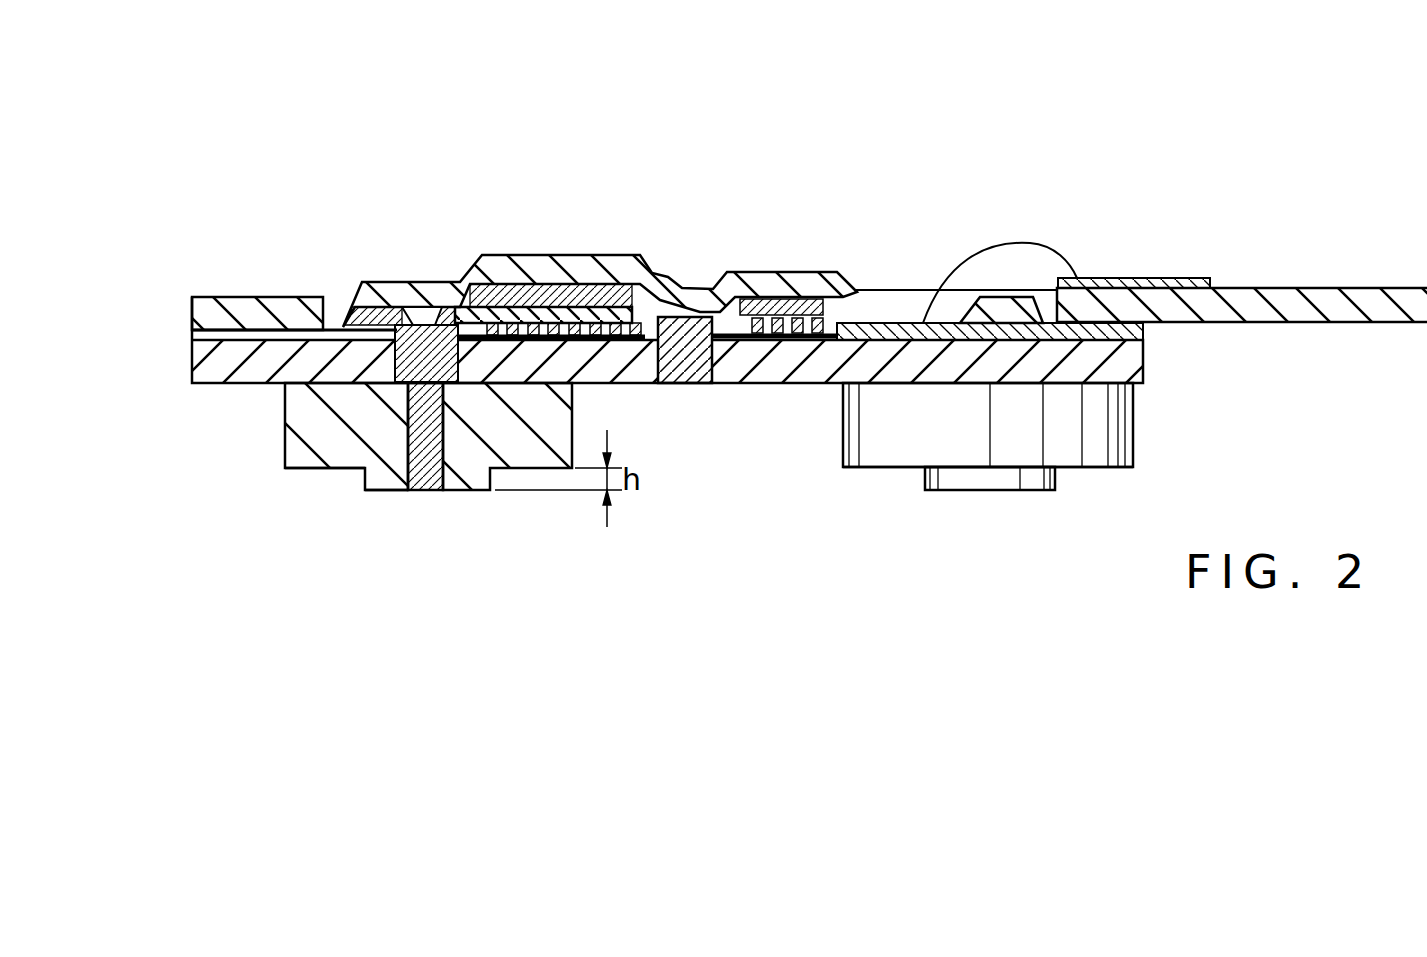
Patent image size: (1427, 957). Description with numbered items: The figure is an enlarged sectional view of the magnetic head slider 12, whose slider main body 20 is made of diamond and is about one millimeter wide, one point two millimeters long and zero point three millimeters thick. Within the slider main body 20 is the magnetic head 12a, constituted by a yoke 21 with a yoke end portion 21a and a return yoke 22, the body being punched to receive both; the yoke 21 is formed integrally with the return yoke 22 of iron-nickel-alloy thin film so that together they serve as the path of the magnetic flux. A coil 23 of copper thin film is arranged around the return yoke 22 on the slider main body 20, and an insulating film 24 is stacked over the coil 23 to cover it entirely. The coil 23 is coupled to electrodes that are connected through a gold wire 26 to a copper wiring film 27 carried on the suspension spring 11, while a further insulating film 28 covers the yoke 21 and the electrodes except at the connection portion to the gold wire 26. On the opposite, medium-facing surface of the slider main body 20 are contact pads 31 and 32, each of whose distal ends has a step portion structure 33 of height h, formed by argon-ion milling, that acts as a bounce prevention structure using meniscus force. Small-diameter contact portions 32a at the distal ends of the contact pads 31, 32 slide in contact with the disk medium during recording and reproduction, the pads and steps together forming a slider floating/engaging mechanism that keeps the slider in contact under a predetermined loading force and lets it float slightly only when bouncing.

The suspension spring 11 is at (237, 297).
The magnetic head slider 12 is at (762, 196).
The magnetic head 12a is at (418, 560).
The slider main body 20 is at (206, 392).
The yoke 21 is at (520, 300).
The yoke end portion 21a is at (425, 488).
The return yoke 22 is at (680, 383).
The coil 23 is at (548, 330).
The insulating film 24 is at (192, 337).
The gold wire 26 is at (1033, 243).
The copper wiring film 27 is at (1162, 280).
The insulating film 28 is at (407, 290).
The contact pad 31 is at (282, 448).
The contact pad 32 is at (1003, 460).
The contact portion 32a is at (367, 492).
The step portion structure 33 is at (313, 470).